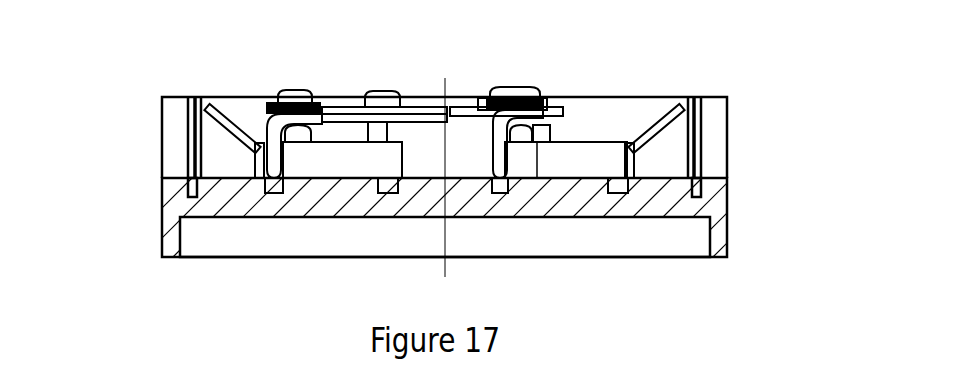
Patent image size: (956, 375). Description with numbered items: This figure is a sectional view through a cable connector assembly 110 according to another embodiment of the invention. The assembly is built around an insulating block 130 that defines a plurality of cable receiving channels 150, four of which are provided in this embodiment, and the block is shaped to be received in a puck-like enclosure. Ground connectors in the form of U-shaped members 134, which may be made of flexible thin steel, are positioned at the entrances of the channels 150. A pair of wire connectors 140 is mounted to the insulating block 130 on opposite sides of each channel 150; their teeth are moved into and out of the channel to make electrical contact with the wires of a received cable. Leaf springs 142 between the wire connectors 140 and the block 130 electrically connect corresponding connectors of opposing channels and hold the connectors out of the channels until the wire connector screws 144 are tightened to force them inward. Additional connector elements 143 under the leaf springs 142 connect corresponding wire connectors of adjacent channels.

The cable connector assembly 110 is at (140, 72).
The insulating block 130 is at (425, 192).
The U-shaped member 134 is at (210, 145).
The wire connector 140 is at (262, 144).
The leaf spring 142 is at (425, 106).
The connector element 143 is at (537, 178).
The wire connector screw 144 is at (620, 53).
The cable receiving channel 150 is at (322, 163).